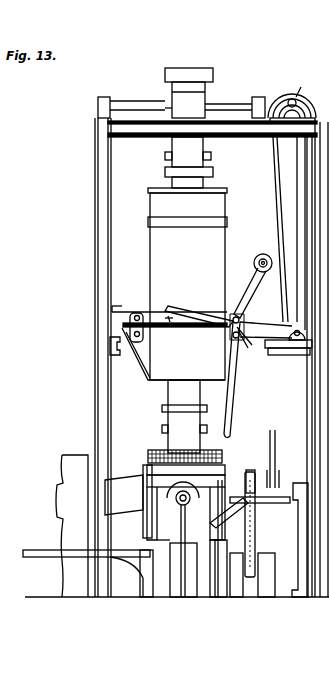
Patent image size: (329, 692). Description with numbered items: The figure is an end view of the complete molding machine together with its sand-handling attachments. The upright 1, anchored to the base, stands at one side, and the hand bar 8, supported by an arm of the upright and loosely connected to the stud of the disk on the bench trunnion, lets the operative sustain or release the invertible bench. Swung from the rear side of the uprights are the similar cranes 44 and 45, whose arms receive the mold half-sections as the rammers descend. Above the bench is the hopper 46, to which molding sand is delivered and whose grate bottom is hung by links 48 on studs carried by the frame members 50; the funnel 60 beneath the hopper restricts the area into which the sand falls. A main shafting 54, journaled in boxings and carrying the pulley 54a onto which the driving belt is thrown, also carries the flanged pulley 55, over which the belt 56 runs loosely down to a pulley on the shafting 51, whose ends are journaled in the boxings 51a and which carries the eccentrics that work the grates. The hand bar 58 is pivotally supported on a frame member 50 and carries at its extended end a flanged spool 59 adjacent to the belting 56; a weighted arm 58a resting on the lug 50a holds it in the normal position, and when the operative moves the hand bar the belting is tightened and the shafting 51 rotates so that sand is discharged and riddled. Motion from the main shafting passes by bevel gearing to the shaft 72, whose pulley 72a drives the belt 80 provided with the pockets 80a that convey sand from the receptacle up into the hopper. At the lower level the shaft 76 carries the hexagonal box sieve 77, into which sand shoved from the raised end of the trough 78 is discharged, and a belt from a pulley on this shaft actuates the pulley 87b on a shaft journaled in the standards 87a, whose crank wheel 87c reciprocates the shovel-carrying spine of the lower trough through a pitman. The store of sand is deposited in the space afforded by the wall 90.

The shaft 72 is at (128, 101).
The pulley 72a is at (207, 92).
The main shafting 54 is at (292, 76).
The pulley 54a is at (300, 86).
The flanged pulley 55 is at (275, 85).
The belt 56 is at (306, 158).
The belt 80 is at (189, 162).
The pockets 80a is at (211, 154).
The hopper 46 is at (224, 252).
The frame members 50 is at (116, 302).
The links 48 is at (110, 327).
The funnel 60 is at (173, 346).
The lug 50a is at (170, 323).
The weighted arm 58a is at (212, 329).
The flanged spool 59 is at (254, 264).
The hand bar 58 is at (231, 421).
The shafting 51 is at (292, 302).
The boxings 51a is at (297, 354).
The box sieve 77 is at (160, 455).
The trough 78 is at (165, 531).
The upright 1 is at (163, 527).
The wall 90 is at (78, 456).
The crane 44 is at (38, 560).
The crane 45 is at (140, 580).
The shaft 76 is at (290, 486).
The hand bar 8 is at (259, 538).
The pulley 87b is at (258, 549).
The standards 87a is at (268, 578).
The crank wheel 87c is at (213, 598).